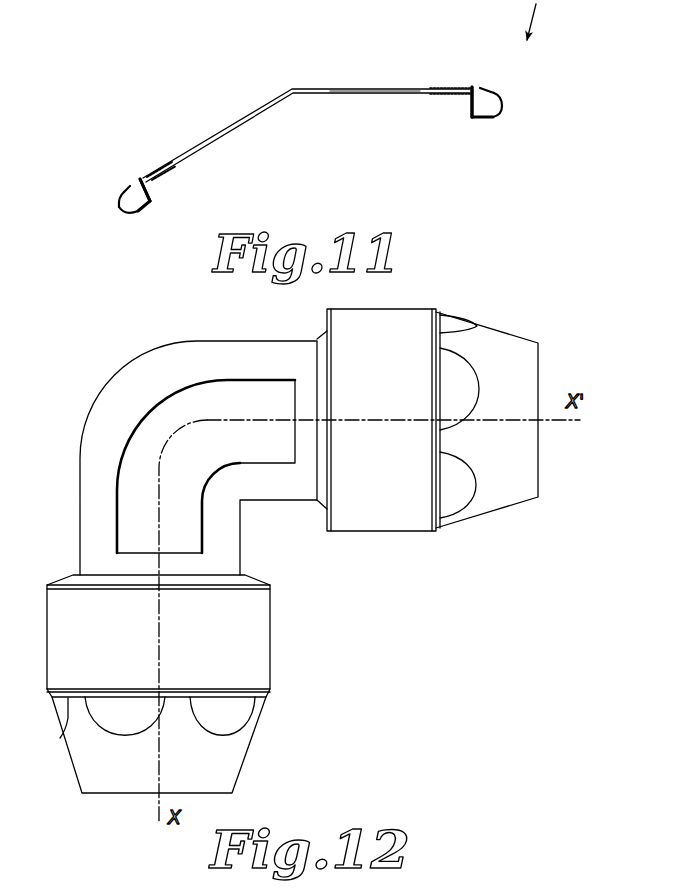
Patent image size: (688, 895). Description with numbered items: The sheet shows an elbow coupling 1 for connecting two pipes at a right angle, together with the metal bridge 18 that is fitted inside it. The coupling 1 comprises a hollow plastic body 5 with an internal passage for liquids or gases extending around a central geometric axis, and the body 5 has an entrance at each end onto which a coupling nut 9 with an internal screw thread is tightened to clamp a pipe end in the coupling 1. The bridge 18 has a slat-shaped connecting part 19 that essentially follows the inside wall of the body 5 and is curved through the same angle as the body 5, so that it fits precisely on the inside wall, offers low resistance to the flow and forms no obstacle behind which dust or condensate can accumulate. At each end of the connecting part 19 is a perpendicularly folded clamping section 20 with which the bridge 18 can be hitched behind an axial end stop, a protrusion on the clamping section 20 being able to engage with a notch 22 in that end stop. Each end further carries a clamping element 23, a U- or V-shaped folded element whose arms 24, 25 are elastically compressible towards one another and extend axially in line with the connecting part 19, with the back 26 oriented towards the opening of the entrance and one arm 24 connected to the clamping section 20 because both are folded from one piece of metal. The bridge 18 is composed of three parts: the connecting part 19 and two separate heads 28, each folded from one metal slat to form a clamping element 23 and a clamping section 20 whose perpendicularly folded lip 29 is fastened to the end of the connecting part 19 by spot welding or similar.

In FIG. 12, the coupling 1 is at (307, 518).
In FIG. 12, the hollow body 5 is at (108, 426).
In FIG. 12, the coupling nut 9 is at (230, 648).
In FIG. 11, the bridge 18 is at (252, 100).
In FIG. 11, the connecting part 19 is at (345, 95).
In FIG. 11, the clamping section 20 is at (150, 195).
In FIG. 11, the notch 22 is at (148, 185).
In FIG. 11, the clamping element 23 is at (127, 160).
In FIG. 11, the arm 24 is at (140, 216).
In FIG. 11, the arm 25 is at (128, 188).
In FIG. 11, the back 26 is at (115, 216).
In FIG. 11, the head 28 is at (118, 232).
In FIG. 11, the lip 29 is at (158, 168).